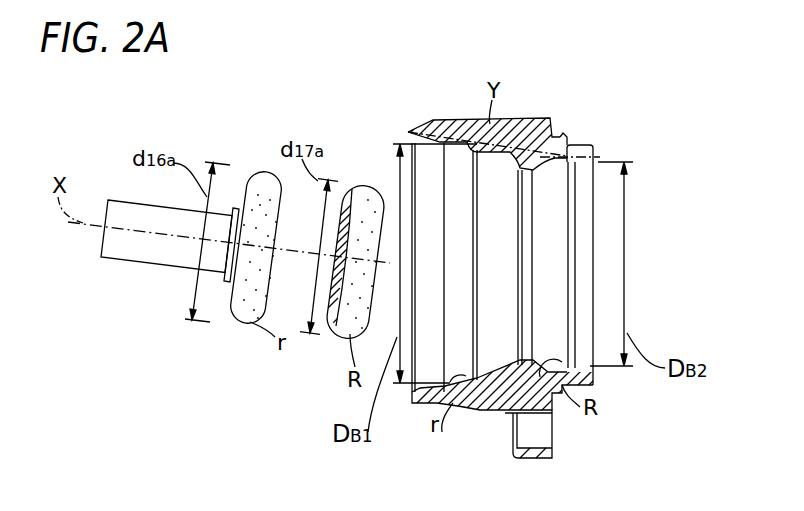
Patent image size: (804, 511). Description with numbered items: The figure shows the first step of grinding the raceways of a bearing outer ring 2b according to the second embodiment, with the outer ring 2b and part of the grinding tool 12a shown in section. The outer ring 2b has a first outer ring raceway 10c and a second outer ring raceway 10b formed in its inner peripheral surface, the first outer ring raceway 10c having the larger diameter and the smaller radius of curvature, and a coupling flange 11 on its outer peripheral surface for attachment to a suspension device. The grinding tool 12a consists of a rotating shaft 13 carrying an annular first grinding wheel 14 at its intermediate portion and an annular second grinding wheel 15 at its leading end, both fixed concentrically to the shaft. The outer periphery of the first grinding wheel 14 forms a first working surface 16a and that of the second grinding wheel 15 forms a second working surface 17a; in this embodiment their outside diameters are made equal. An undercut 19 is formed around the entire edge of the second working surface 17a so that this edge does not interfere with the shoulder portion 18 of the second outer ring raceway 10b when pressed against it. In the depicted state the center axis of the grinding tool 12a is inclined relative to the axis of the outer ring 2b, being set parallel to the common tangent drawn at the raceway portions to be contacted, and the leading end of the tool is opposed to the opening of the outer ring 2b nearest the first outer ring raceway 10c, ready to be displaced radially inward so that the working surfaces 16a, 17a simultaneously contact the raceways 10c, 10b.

The rotating shaft 13 is at (122, 201).
The first grinding wheel 14 is at (234, 268).
The grinding tool 12a is at (234, 187).
The first working surface 16a is at (255, 172).
The second working surface 17a is at (331, 216).
The undercut 19 is at (345, 192).
The second grinding wheel 15 is at (333, 283).
The outer ring 2b is at (528, 134).
The first outer ring raceway 10c is at (452, 137).
The second outer ring raceway 10b is at (560, 143).
The shoulder portion 18 is at (537, 167).
The coupling flange 11 is at (537, 457).